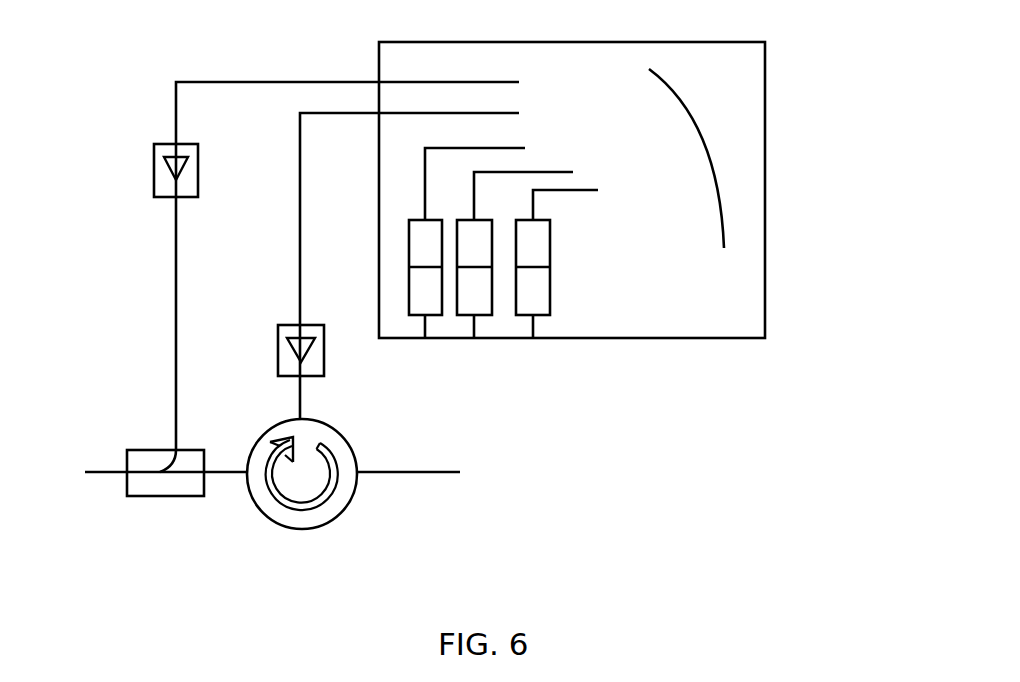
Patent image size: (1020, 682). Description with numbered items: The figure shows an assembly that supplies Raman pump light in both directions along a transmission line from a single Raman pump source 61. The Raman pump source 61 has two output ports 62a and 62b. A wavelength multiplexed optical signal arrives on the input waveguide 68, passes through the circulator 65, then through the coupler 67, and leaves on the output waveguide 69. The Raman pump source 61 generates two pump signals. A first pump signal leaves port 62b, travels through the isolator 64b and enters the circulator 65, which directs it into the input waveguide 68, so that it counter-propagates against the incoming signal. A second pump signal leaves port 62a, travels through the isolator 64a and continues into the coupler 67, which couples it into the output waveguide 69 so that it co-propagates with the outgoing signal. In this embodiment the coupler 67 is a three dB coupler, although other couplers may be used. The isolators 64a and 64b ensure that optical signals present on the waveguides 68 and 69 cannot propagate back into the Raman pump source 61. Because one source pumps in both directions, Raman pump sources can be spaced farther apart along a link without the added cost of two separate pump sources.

The Raman pump source 61 is at (765, 120).
The output port 62a is at (372, 79).
The output port 62b is at (379, 114).
The isolator 64a is at (154, 184).
The isolator 64b is at (324, 358).
The circulator 65 is at (355, 445).
The coupler 67 is at (150, 498).
The input waveguide 68 is at (402, 472).
The output waveguide 69 is at (117, 472).